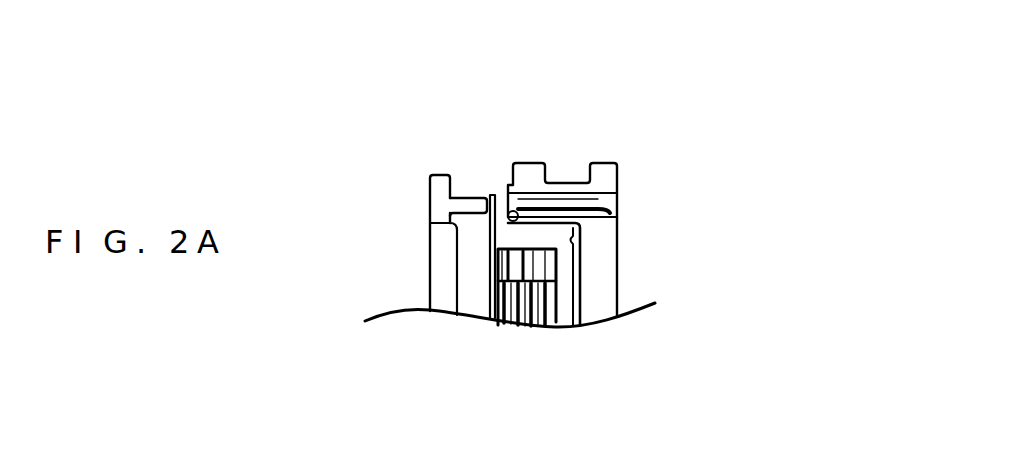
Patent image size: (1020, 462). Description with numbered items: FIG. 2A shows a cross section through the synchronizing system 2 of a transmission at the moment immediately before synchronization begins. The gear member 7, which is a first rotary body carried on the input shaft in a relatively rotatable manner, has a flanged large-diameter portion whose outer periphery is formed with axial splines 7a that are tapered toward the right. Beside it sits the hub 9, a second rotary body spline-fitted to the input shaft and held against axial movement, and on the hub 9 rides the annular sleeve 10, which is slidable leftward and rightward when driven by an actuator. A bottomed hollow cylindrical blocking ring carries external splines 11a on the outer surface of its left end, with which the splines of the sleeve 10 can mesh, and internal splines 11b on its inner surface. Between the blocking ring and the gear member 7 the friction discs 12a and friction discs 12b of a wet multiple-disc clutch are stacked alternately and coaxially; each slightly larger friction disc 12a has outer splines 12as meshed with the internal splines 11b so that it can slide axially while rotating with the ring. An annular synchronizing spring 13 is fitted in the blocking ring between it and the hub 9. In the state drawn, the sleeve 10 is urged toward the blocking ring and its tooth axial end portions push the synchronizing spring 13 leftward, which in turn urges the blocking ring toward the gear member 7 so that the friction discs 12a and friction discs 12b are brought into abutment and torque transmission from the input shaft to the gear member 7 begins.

The synchronizing system 2 is at (664, 84).
The gear member 7 is at (430, 207).
The splines 7a is at (471, 196).
The hub 9 is at (620, 284).
The sleeve 10 is at (603, 160).
The external splines 11a is at (497, 194).
The internal splines 11b is at (570, 240).
The friction disc 12a is at (500, 318).
The splines 12as is at (507, 274).
The friction disc 12b is at (532, 315).
The synchronizing spring 13 is at (507, 217).